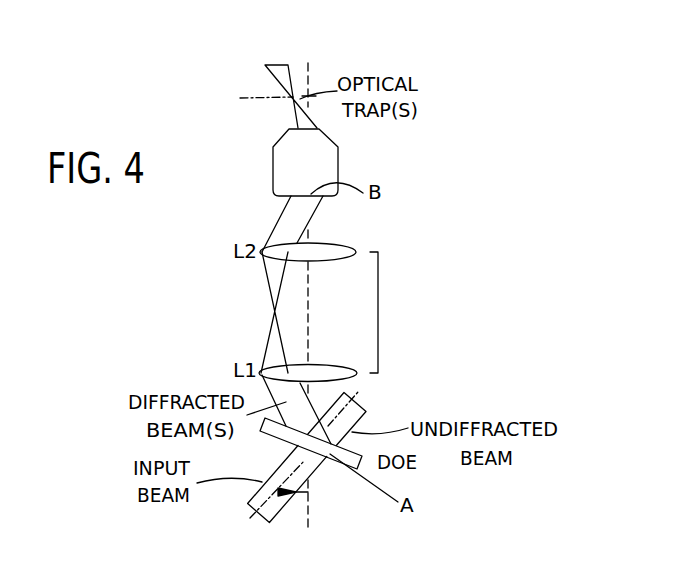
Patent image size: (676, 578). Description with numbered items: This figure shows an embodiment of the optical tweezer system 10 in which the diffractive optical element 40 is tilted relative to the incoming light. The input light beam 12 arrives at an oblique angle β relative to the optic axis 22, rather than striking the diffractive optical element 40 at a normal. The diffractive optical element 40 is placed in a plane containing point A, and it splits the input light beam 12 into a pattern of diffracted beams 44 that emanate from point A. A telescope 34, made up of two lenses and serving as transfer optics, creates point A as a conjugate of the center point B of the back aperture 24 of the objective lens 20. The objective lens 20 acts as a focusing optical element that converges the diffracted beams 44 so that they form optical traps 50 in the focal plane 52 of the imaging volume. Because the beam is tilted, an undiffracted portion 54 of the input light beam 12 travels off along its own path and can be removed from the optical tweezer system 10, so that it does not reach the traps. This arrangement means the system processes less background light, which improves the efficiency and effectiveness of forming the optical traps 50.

The optical tweezer system 10 is at (422, 235).
The input light beam 12 is at (250, 498).
The objective lens 20 is at (327, 155).
The optic axis 22 is at (307, 510).
The back aperture 24 is at (281, 195).
The telescope 34 is at (379, 310).
The diffractive optical element 40 is at (340, 466).
The diffracted output beam 44 is at (264, 386).
The optical traps 50 is at (299, 90).
The focal plane 52 is at (250, 102).
The undiffracted portion 54 is at (353, 405).